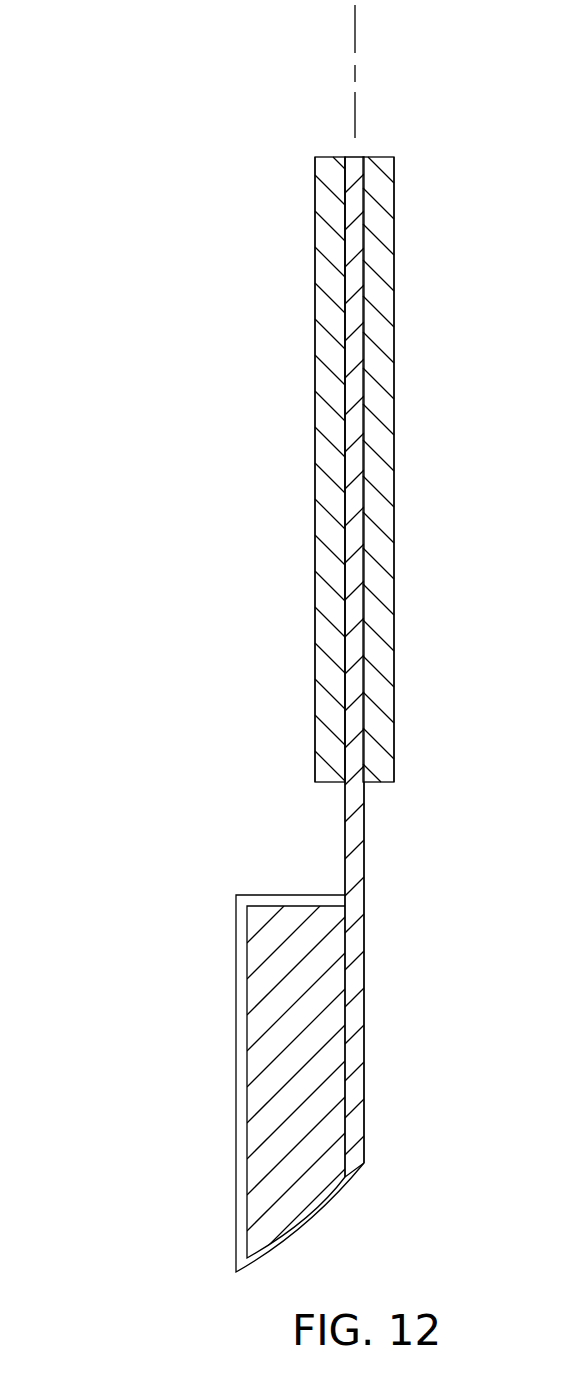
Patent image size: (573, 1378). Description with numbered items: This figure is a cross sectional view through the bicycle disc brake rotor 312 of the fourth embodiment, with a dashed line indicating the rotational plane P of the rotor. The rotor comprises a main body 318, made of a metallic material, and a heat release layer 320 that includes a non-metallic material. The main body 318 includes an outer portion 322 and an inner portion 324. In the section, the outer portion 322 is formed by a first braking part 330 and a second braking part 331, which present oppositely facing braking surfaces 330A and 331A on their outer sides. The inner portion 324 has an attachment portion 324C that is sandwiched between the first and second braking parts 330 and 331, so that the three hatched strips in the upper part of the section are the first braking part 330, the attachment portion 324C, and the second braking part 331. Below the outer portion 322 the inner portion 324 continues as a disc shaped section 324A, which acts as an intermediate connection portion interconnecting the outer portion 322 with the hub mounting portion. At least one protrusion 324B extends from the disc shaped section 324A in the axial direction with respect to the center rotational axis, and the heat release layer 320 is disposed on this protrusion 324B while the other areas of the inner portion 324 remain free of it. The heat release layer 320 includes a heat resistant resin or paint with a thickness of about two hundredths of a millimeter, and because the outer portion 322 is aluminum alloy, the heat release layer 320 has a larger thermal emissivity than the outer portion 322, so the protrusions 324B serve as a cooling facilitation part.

The rotational plane P is at (355, 28).
The bicycle disc brake rotor 312 is at (160, 355).
The main body 318 is at (212, 698).
The heat release layer 320 is at (236, 1146).
The outer portion 322 is at (306, 716).
The inner portion 324 is at (334, 857).
The disc shaped section 324A is at (366, 845).
The protrusion 324B is at (278, 1073).
The attachment portion 324C is at (357, 511).
The first braking part 330 is at (331, 273).
The braking surface 330A is at (315, 436).
The second braking part 331 is at (380, 290).
The braking surface 331A is at (395, 405).